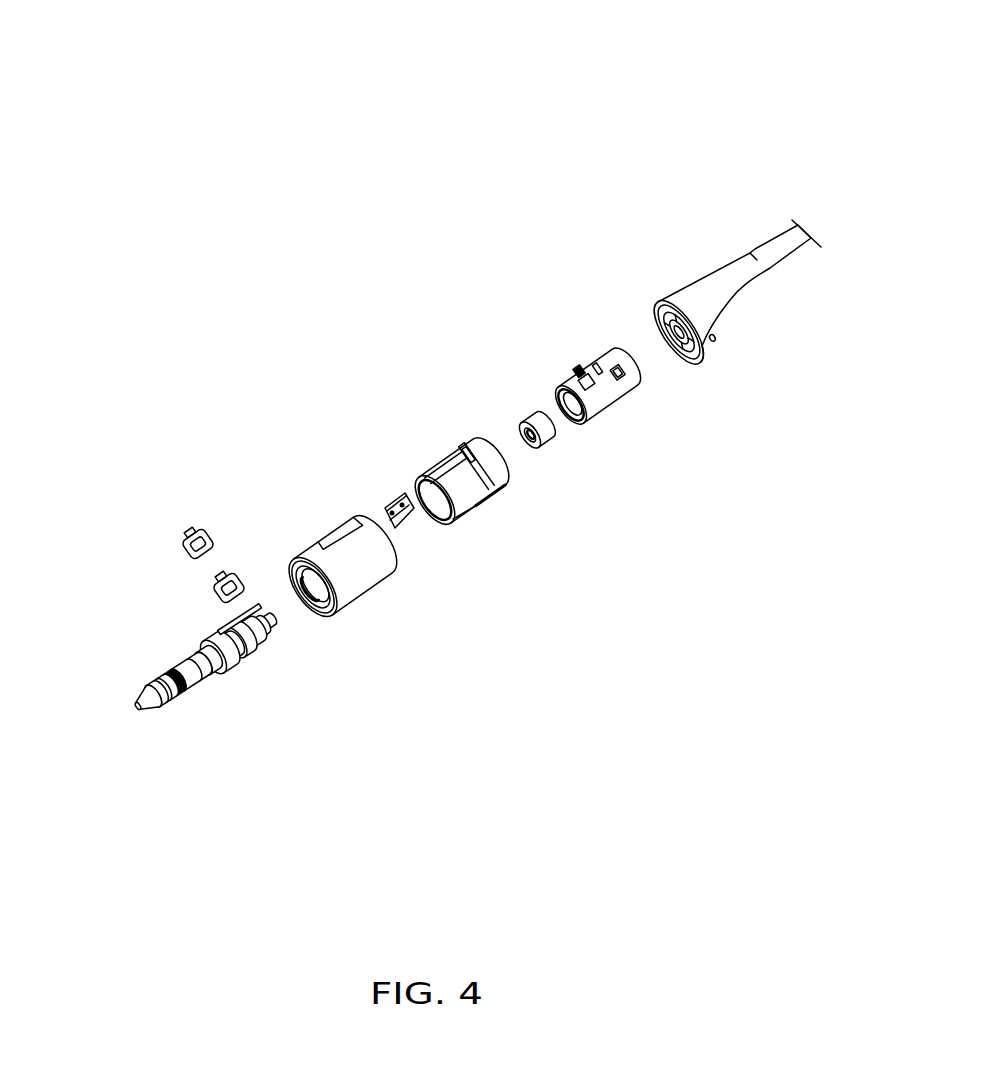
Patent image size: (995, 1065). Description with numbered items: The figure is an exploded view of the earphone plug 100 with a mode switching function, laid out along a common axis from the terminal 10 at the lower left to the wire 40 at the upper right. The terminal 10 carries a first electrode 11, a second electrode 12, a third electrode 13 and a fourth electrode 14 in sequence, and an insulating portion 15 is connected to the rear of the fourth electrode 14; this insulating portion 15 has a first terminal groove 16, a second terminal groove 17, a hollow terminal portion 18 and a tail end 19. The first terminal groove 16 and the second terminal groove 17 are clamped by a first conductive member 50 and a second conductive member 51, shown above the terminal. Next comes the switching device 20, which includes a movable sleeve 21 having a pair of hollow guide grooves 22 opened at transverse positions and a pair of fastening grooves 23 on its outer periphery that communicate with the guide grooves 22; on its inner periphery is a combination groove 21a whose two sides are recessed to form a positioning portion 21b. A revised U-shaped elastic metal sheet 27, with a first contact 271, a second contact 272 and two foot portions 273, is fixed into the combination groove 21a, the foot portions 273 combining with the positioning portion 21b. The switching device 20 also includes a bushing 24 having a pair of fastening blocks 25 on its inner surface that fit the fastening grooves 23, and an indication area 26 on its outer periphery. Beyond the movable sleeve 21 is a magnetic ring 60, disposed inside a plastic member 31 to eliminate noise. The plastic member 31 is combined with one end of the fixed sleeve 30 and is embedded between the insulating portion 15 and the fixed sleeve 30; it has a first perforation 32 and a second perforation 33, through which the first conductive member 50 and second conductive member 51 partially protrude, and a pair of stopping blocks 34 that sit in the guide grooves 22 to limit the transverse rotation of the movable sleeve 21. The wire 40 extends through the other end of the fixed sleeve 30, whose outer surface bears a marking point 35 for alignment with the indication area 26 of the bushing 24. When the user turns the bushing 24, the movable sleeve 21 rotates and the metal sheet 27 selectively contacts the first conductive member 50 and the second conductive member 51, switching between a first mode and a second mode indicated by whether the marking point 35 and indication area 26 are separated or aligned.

The earphone plug 100 is at (818, 44).
The terminal 10 is at (126, 580).
The first electrode 11 is at (160, 702).
The second electrode 12 is at (185, 688).
The third electrode 13 is at (205, 672).
The fourth electrode 14 is at (222, 660).
The insulating portion 15 is at (260, 607).
The first terminal groove 16 is at (232, 660).
The second terminal groove 17 is at (250, 651).
The hollow terminal portion 18 is at (262, 642).
The tail end 19 is at (275, 628).
The switching device 20 is at (351, 379).
The movable sleeve 21 is at (472, 513).
The combination groove 21a is at (417, 483).
The positioning portion 21b is at (413, 490).
The hollow guide grooves 22 is at (457, 440).
The fastening grooves 23 is at (472, 493).
The bushing 24 is at (364, 571).
The fastening blocks 25 is at (310, 604).
The indication area 26 is at (340, 537).
The revised U-shaped elastic metal sheet 27 is at (462, 599).
The first contact 271 is at (407, 521).
The second contact 272 is at (470, 500).
The foot portions 273 is at (394, 525).
The fixed sleeve 30 is at (734, 279).
The plastic member 31 is at (606, 384).
The first perforation 32 is at (570, 387).
The second perforation 33 is at (592, 370).
The stopping blocks 34 is at (600, 395).
The marking point 35 is at (716, 340).
The wire 40 is at (783, 228).
The first conductive member 50 is at (193, 525).
The second conductive member 51 is at (228, 572).
The magnetic ring 60 is at (547, 433).